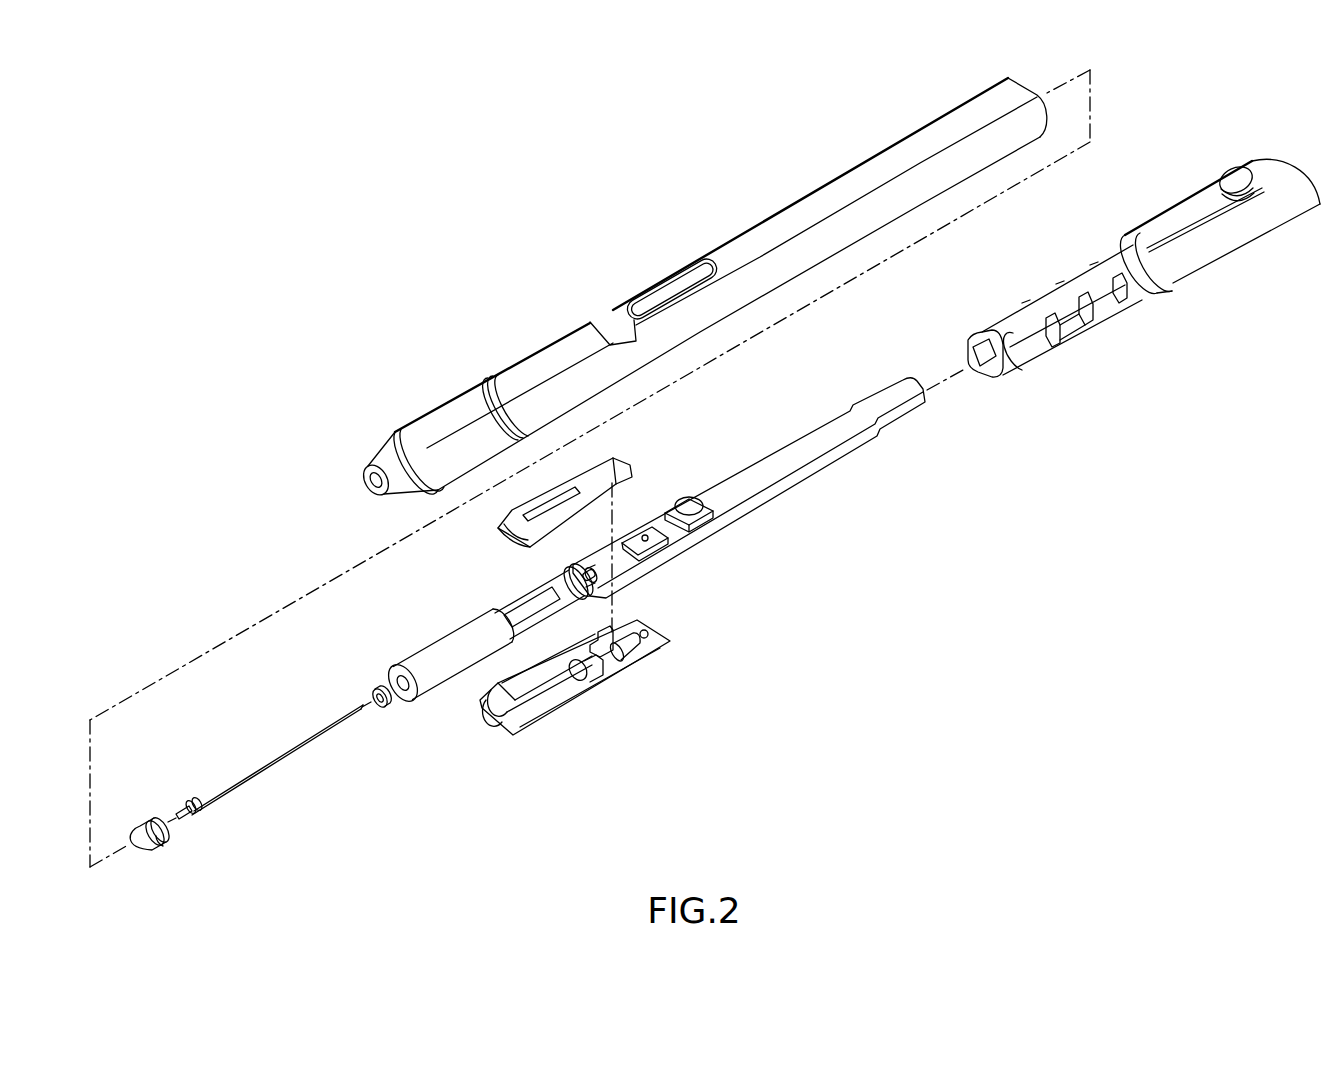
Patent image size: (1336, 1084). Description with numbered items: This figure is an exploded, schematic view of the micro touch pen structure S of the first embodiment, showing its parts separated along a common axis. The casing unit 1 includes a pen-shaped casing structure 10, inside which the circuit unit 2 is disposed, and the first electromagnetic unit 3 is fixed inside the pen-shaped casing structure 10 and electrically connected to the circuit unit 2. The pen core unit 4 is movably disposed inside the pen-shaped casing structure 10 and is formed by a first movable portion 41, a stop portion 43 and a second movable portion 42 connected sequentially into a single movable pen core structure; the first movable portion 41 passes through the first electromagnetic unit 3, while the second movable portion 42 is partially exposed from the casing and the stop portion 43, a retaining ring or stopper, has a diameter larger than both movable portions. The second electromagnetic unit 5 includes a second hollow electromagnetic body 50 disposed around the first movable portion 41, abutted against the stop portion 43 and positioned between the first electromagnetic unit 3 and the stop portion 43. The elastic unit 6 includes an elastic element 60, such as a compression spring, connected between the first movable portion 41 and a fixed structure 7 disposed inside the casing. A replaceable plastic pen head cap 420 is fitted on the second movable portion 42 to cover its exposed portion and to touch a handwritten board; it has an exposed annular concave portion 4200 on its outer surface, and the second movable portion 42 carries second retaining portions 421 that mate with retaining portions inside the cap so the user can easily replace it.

The casing unit 1 is at (839, 288).
The pen-shaped casing structure 10 is at (768, 218).
The circuit unit 2 is at (782, 500).
The first electromagnetic unit 3 is at (437, 640).
The pen core unit 4 is at (234, 814).
The first movable portion 41 is at (243, 780).
The second movable portion 42 is at (183, 820).
The stop portion 43 is at (197, 815).
The plastic pen head cap 420 is at (147, 834).
The second retaining portions 421 is at (186, 800).
The exposed annular concave portion 4200 is at (160, 842).
The second electromagnetic unit 5 is at (393, 756).
The second hollow electromagnetic body 50 is at (387, 703).
The elastic unit 6 is at (575, 695).
The elastic element 60 is at (594, 608).
The fixed structure 7 is at (574, 675).
The micro touch pen structure S is at (315, 379).